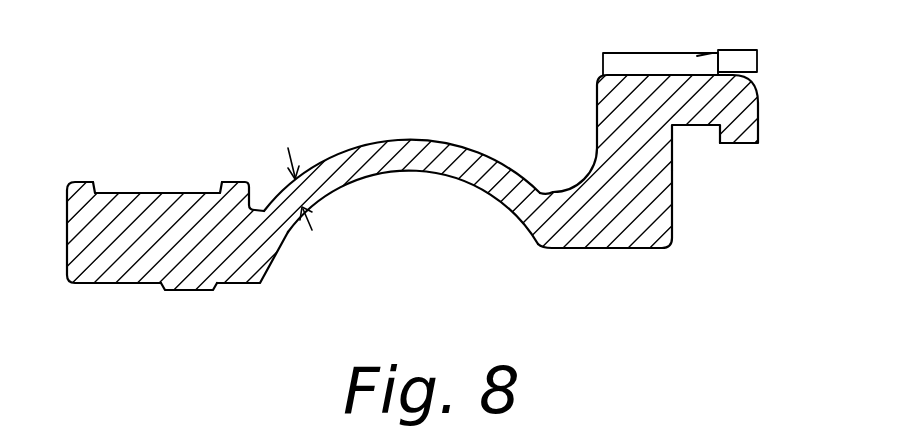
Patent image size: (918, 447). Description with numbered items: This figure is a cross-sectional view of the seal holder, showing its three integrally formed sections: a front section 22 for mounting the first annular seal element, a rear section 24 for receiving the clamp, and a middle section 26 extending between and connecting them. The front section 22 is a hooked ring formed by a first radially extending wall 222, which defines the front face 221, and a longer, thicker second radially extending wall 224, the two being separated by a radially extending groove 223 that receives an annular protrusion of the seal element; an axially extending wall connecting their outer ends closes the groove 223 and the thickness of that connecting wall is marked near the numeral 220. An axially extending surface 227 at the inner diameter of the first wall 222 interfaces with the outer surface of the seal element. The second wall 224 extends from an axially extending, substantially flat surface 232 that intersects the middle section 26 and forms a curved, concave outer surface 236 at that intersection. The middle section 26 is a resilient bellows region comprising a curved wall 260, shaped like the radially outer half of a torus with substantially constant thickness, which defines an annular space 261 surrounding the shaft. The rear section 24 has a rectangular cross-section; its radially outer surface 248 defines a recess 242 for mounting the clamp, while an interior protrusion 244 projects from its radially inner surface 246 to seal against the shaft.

The front section 22 is at (675, 147).
The rear section 24 is at (177, 188).
The middle section 26 is at (409, 131).
The notch 220 is at (695, 127).
The front face 221 is at (760, 130).
The first radially extending wall 222 is at (759, 112).
The groove 223 is at (693, 160).
The second radially extending wall 224 is at (622, 133).
The axially extending surface 227 is at (747, 146).
The axially extending flat surface 232 is at (589, 250).
The curved concave outer surface 236 is at (590, 171).
The recess 242 is at (156, 182).
The interior protrusion 244 is at (188, 291).
The radially inner surface 246 is at (93, 284).
The radially outer surface 248 is at (80, 178).
The curved wall 260 is at (398, 138).
The annular space 261 is at (430, 230).